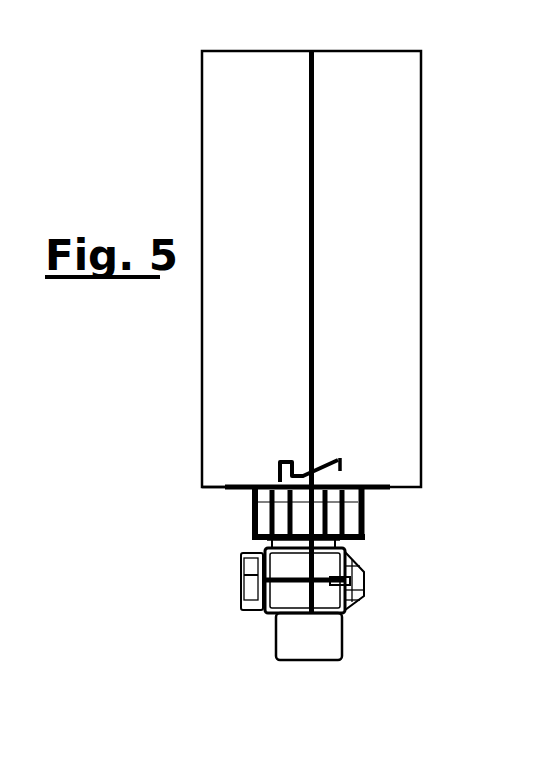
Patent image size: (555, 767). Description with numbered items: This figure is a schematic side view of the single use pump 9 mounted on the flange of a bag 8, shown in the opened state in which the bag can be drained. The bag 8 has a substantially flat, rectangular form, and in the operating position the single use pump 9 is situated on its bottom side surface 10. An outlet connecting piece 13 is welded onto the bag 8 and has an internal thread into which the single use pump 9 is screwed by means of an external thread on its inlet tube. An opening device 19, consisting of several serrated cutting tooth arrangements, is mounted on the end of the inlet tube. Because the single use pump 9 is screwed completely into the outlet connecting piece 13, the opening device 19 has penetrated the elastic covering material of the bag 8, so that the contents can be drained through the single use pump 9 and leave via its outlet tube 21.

The bag 8 is at (248, 155).
The bottom side surface 10 is at (217, 488).
The outlet connecting piece 13 is at (350, 512).
The opening device 19 is at (335, 462).
The single use pump 9 is at (328, 598).
The outlet tube 21 is at (295, 637).